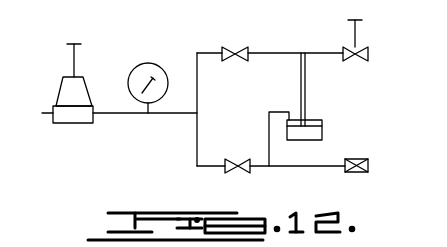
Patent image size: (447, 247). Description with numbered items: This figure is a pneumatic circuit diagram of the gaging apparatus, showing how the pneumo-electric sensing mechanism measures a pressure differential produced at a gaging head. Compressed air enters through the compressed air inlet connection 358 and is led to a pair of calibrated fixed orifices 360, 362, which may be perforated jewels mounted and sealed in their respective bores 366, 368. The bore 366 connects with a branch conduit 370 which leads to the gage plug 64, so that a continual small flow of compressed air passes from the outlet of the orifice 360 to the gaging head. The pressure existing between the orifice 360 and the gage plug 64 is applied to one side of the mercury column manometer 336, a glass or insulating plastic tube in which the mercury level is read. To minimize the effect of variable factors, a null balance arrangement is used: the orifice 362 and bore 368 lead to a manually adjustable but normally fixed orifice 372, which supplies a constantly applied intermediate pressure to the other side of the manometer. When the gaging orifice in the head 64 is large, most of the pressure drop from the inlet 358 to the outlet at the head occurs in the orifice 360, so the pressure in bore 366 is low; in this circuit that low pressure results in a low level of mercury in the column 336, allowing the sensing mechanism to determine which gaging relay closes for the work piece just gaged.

The compressed air inlet connection 358 is at (180, 113).
The bore 368 is at (267, 53).
The calibrated fixed orifice 362 is at (243, 47).
The manually adjustable orifice 372 is at (364, 55).
The manometer column 336 is at (308, 100).
The bore 366 is at (292, 165).
The branch conduit 370 is at (322, 165).
The calibrated fixed orifice 360 is at (239, 165).
The gage plug 64 is at (355, 157).